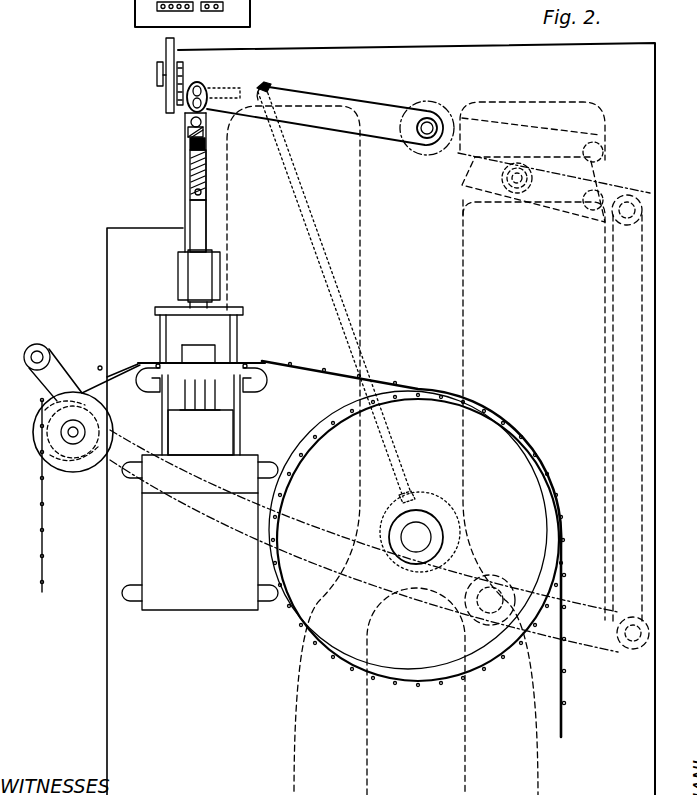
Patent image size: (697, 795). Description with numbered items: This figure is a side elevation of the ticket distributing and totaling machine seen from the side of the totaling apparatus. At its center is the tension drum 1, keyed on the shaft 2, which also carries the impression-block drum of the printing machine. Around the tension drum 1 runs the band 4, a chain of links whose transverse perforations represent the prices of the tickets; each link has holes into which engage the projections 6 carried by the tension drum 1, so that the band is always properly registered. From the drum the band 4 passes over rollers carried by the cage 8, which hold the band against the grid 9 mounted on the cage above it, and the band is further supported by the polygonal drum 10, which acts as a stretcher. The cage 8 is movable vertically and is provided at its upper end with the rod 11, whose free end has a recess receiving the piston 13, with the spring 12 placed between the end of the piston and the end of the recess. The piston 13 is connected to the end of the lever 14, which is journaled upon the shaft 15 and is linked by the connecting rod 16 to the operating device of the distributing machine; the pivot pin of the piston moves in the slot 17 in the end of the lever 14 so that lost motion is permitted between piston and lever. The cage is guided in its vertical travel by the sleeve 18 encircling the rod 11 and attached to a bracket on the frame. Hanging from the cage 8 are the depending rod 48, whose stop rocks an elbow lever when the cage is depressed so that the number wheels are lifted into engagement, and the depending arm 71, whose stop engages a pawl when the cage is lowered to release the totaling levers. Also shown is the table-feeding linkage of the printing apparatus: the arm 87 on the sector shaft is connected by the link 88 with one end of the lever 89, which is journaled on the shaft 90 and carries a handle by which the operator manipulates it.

The tension drum 1 is at (408, 530).
The shaft 2 is at (416, 537).
The band 4 is at (312, 368).
The projections 6 is at (417, 683).
The cage 8 is at (160, 368).
The grid 9 is at (235, 337).
The polygonal drum 10 is at (72, 460).
The rod 11 is at (204, 218).
The spring 12 is at (208, 176).
The piston 13 is at (208, 146).
The lever 14 is at (325, 113).
The shaft 15 is at (426, 136).
The connecting rod 16 is at (554, 162).
The slot 17 is at (203, 88).
The sleeve 18 is at (199, 279).
The depending rod 48 is at (162, 415).
The depending arm 71 is at (241, 410).
The arm 87 is at (540, 204).
The link 88 is at (630, 422).
The lever 89 is at (58, 374).
The shaft 90 is at (492, 590).